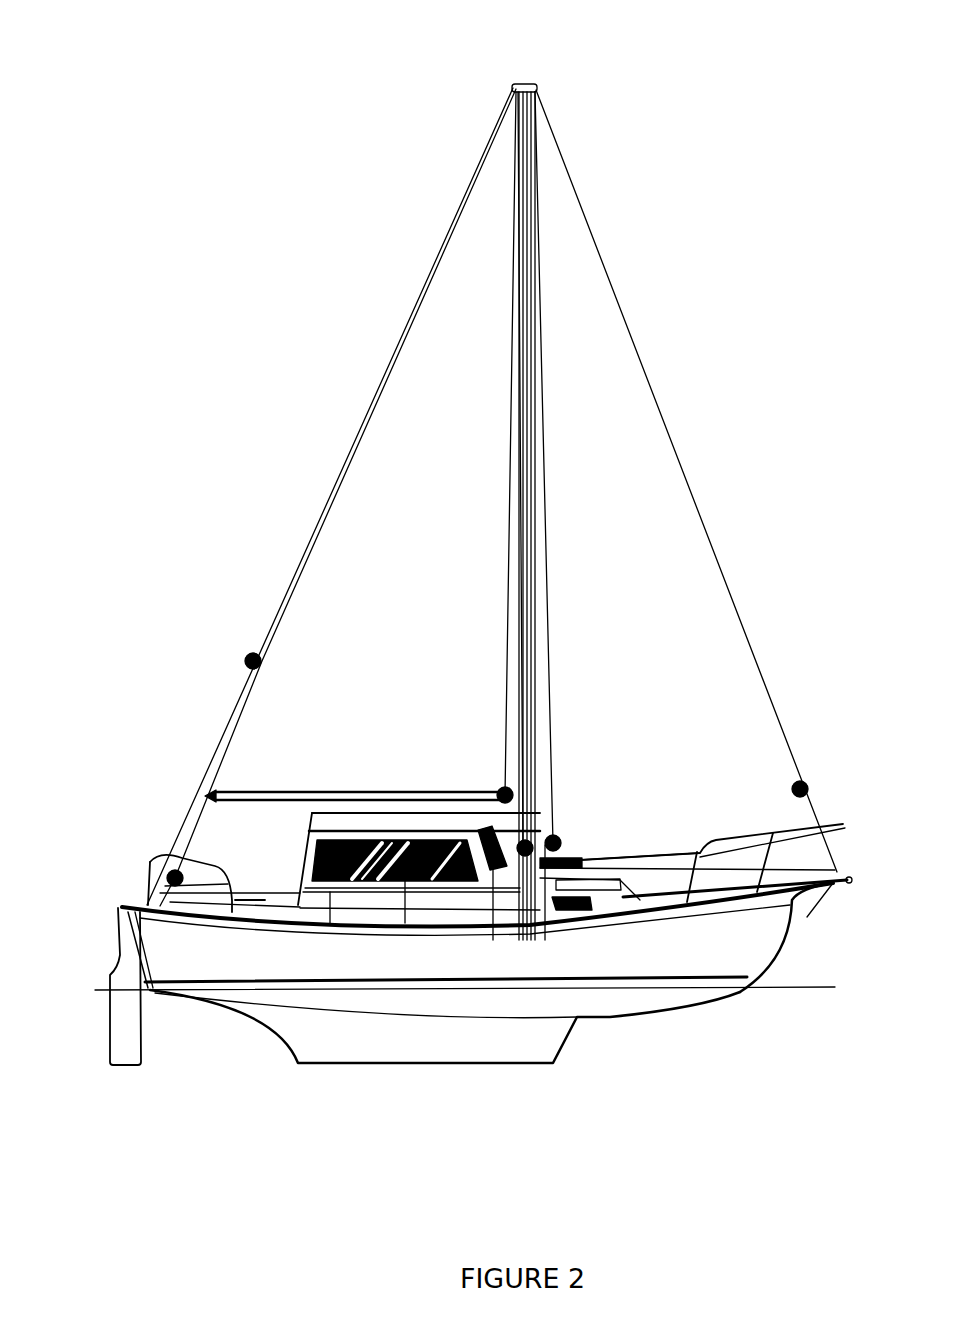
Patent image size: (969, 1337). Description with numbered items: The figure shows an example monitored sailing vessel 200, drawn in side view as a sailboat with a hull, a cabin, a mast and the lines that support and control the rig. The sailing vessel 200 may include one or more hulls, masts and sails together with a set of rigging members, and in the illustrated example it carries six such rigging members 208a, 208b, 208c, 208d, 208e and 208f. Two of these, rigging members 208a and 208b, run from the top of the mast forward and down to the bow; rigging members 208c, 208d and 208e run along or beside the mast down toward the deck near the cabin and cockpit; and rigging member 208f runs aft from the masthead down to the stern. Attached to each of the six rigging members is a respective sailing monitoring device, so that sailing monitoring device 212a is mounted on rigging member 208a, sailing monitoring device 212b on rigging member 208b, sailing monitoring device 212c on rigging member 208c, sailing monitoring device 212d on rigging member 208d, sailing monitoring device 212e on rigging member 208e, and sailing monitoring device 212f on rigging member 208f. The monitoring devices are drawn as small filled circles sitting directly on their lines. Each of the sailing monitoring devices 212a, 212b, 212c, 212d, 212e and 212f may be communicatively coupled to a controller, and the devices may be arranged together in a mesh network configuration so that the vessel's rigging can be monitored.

The monitored sailing vessel 200 is at (264, 56).
The rigging member 208a is at (286, 598).
The rigging member 208b is at (206, 812).
The rigging member 208c is at (510, 688).
The rigging member 208d is at (518, 708).
The rigging member 208e is at (546, 708).
The rigging member 208f is at (795, 758).
The sailing monitoring device 212a is at (252, 660).
The sailing monitoring device 212b is at (170, 876).
The sailing monitoring device 212c is at (505, 795).
The sailing monitoring device 212d is at (540, 833).
The sailing monitoring device 212e is at (556, 840).
The sailing monitoring device 212f is at (802, 788).